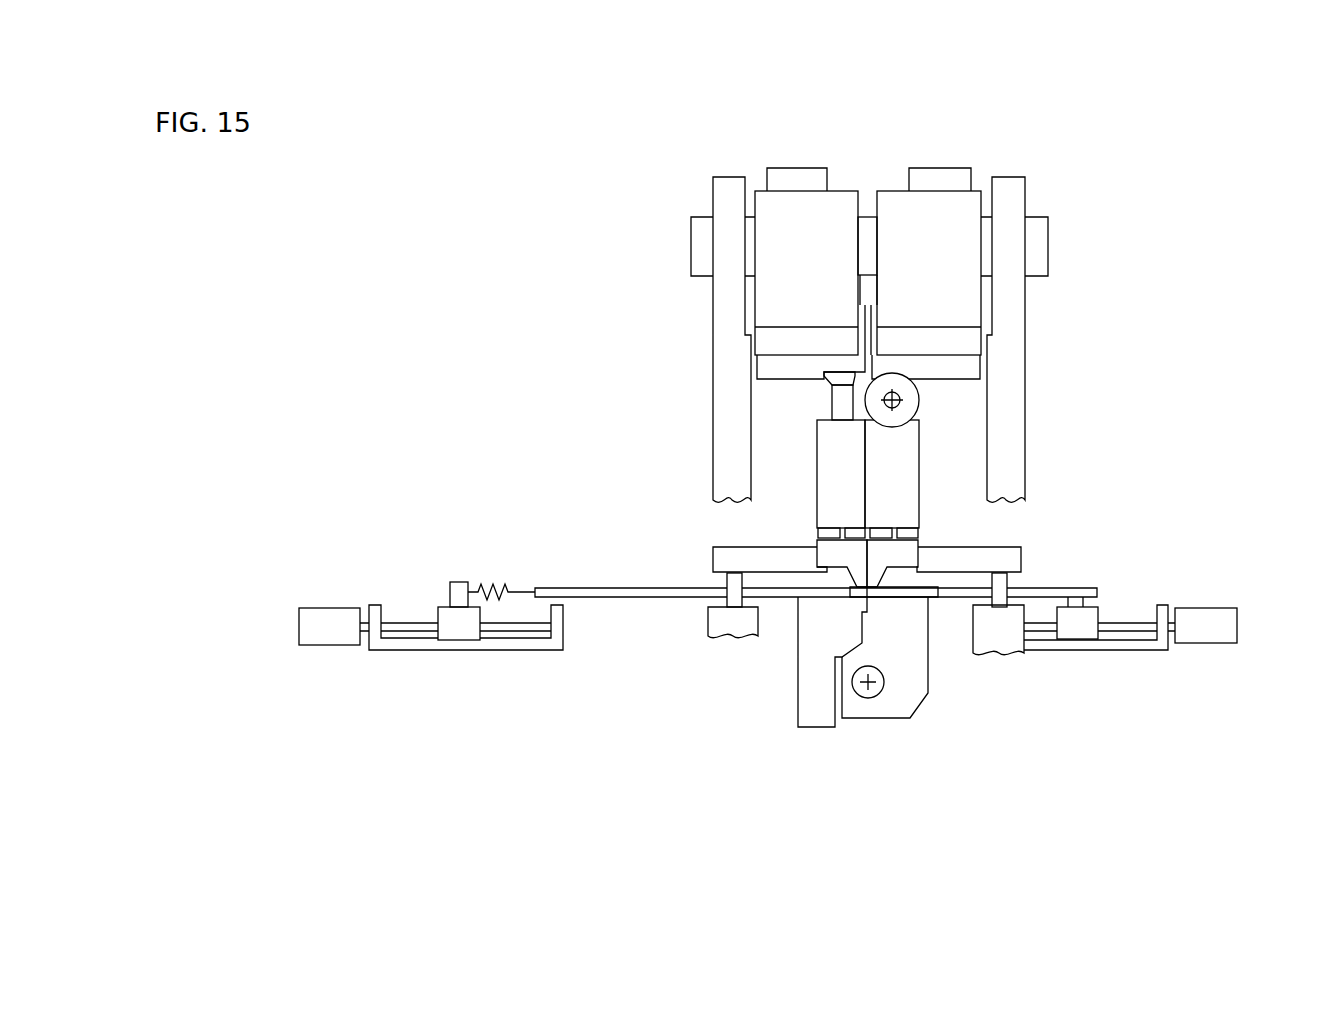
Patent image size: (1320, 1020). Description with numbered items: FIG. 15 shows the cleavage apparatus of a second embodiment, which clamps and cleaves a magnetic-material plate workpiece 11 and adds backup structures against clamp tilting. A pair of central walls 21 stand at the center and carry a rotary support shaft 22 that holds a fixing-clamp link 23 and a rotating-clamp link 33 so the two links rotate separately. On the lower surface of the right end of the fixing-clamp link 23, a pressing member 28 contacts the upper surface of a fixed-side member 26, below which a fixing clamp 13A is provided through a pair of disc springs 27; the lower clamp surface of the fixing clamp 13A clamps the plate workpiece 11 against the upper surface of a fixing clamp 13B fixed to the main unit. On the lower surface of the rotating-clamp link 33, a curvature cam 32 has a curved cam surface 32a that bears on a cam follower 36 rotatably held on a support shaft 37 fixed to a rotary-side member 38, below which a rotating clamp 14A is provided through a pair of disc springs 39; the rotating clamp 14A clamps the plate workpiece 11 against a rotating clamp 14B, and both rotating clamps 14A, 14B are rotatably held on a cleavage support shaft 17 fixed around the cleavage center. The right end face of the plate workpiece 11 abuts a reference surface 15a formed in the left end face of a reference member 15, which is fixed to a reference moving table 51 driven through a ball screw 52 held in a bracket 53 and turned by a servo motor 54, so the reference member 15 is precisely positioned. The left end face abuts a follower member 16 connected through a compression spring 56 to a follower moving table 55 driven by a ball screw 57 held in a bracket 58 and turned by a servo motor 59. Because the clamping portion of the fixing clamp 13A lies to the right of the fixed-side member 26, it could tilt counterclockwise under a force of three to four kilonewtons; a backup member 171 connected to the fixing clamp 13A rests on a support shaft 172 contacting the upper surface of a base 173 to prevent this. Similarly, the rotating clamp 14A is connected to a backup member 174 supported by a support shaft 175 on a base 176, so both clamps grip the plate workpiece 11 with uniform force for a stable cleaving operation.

The plate workpiece 11 is at (1012, 562).
The fixing clamp 13A is at (817, 542).
The fixing clamp 13B is at (808, 648).
The rotating clamp 14A is at (917, 543).
The rotating clamp 14B is at (907, 650).
The reference member 15 is at (1083, 592).
The reference surface 15a is at (937, 592).
The follower member 16 is at (615, 595).
The cleavage support shaft 17 is at (880, 690).
The central walls 21 is at (730, 187).
The rotary support shaft 22 is at (1037, 223).
The fixing-clamp link 23 is at (845, 203).
The fixed-side member 26 is at (833, 453).
The disc springs 27 is at (827, 543).
The pressing member 28 is at (835, 380).
The curvature cam 32 is at (957, 368).
The cam surface 32a is at (913, 392).
The rotating-clamp link 33 is at (943, 205).
The cam follower 36 is at (900, 403).
The support shaft 37 is at (910, 410).
The rotary-side member 38 is at (908, 467).
The disc springs 39 is at (925, 533).
The reference moving table 51 is at (1077, 623).
The ball screw 52 is at (1130, 627).
The bracket 53 is at (1163, 637).
The servo motor 54 is at (1207, 620).
The follower moving table 55 is at (460, 628).
The compression spring 56 is at (492, 582).
The ball screw 57 is at (518, 628).
The bracket 58 is at (558, 637).
The servo motor 59 is at (310, 630).
The backup member 171 is at (720, 560).
The support shaft 172 is at (723, 582).
The base 173 is at (722, 622).
The backup member 174 is at (905, 590).
The support shaft 175 is at (1007, 585).
The base 176 is at (1010, 647).